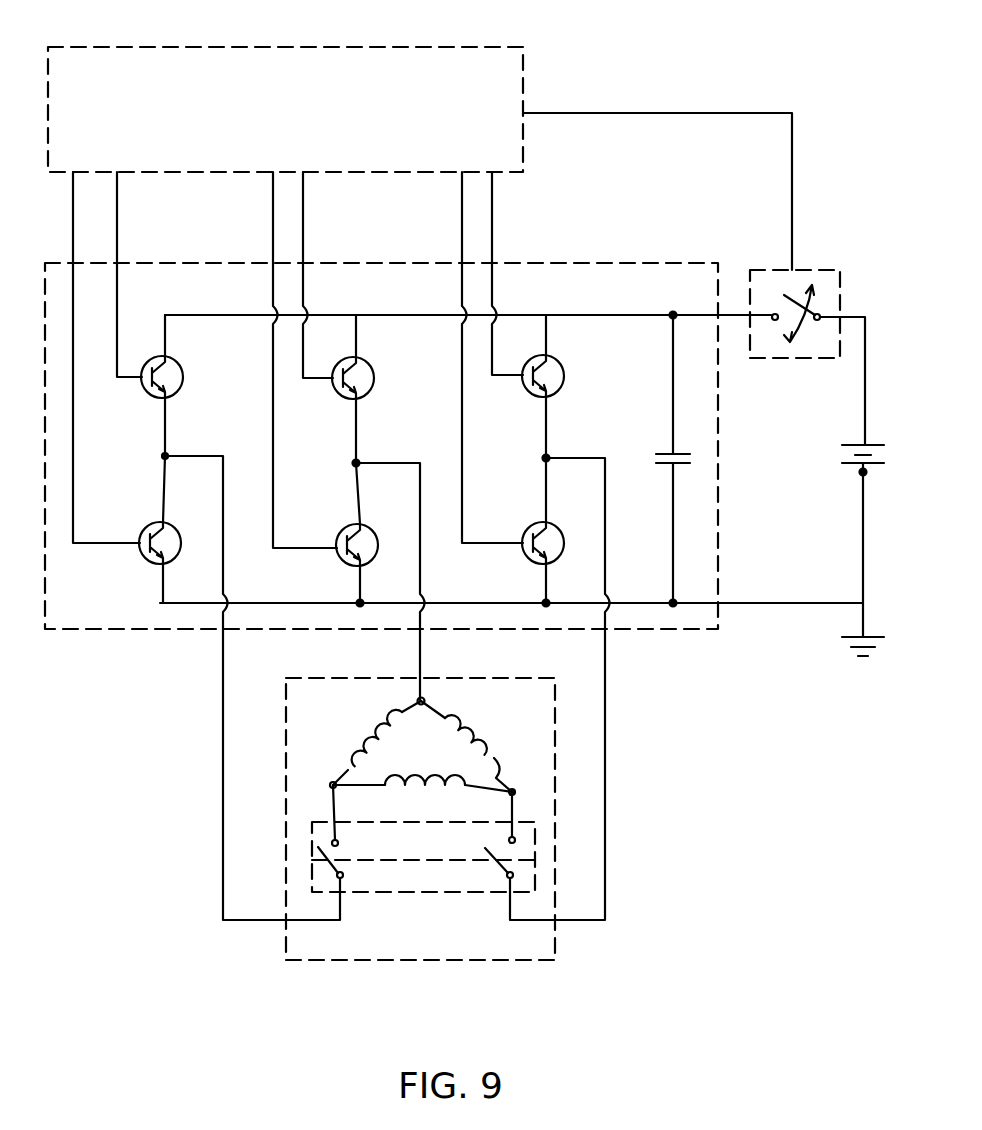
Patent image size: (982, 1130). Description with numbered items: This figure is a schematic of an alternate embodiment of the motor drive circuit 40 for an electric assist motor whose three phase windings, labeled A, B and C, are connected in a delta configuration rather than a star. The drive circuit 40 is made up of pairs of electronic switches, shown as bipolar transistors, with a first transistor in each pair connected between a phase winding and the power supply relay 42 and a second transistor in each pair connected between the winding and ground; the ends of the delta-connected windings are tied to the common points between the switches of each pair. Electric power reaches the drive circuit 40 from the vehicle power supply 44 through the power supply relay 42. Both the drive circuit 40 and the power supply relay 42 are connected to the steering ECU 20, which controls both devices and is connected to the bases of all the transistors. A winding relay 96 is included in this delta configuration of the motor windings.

The steering ECU 20 is at (478, 50).
The motor drive circuit 40 is at (597, 263).
The power supply relay 42 is at (813, 270).
The vehicle power supply 44 is at (835, 480).
The winding relay 96 is at (455, 963).